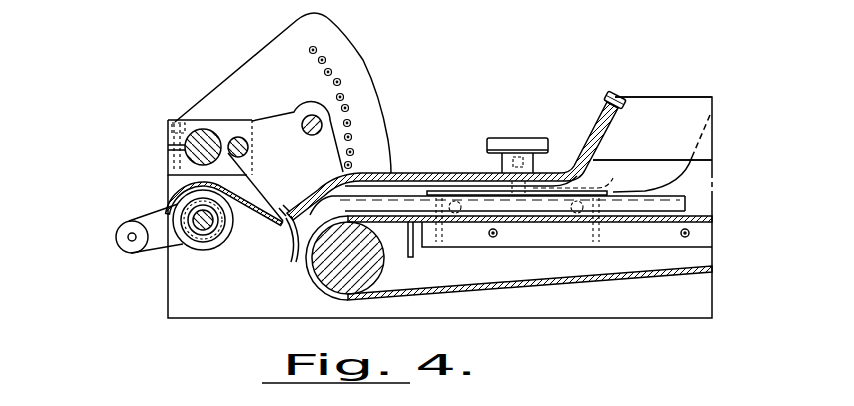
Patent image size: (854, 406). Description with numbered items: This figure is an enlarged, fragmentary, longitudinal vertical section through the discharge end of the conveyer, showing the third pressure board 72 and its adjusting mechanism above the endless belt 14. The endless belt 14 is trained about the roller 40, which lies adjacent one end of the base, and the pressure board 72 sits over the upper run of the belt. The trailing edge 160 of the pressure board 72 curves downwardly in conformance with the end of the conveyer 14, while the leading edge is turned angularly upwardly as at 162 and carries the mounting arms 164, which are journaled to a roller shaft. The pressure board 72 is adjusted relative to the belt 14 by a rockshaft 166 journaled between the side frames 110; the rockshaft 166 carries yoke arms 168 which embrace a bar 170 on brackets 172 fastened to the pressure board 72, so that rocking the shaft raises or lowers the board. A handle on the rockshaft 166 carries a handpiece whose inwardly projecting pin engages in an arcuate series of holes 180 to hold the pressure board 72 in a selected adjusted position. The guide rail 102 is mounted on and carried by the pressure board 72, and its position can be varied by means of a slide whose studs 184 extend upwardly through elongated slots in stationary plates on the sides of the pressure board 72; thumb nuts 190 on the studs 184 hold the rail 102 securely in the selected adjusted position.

The endless belt 14 is at (712, 219).
The roller 40 is at (336, 289).
The third pressure board 72 is at (431, 156).
The guide rail 102 is at (687, 205).
The side frames 110 is at (338, 34).
The trailing edge 160 is at (302, 183).
The leading edge 162 is at (606, 136).
The mounting arms 164 is at (645, 106).
The rockshaft 166 is at (200, 131).
The yoke arms 168 is at (222, 119).
The bar 170 is at (236, 136).
The brackets 172 is at (287, 113).
The holes 180 is at (341, 82).
The studs 184 is at (578, 181).
The thumb nuts 190 is at (516, 138).